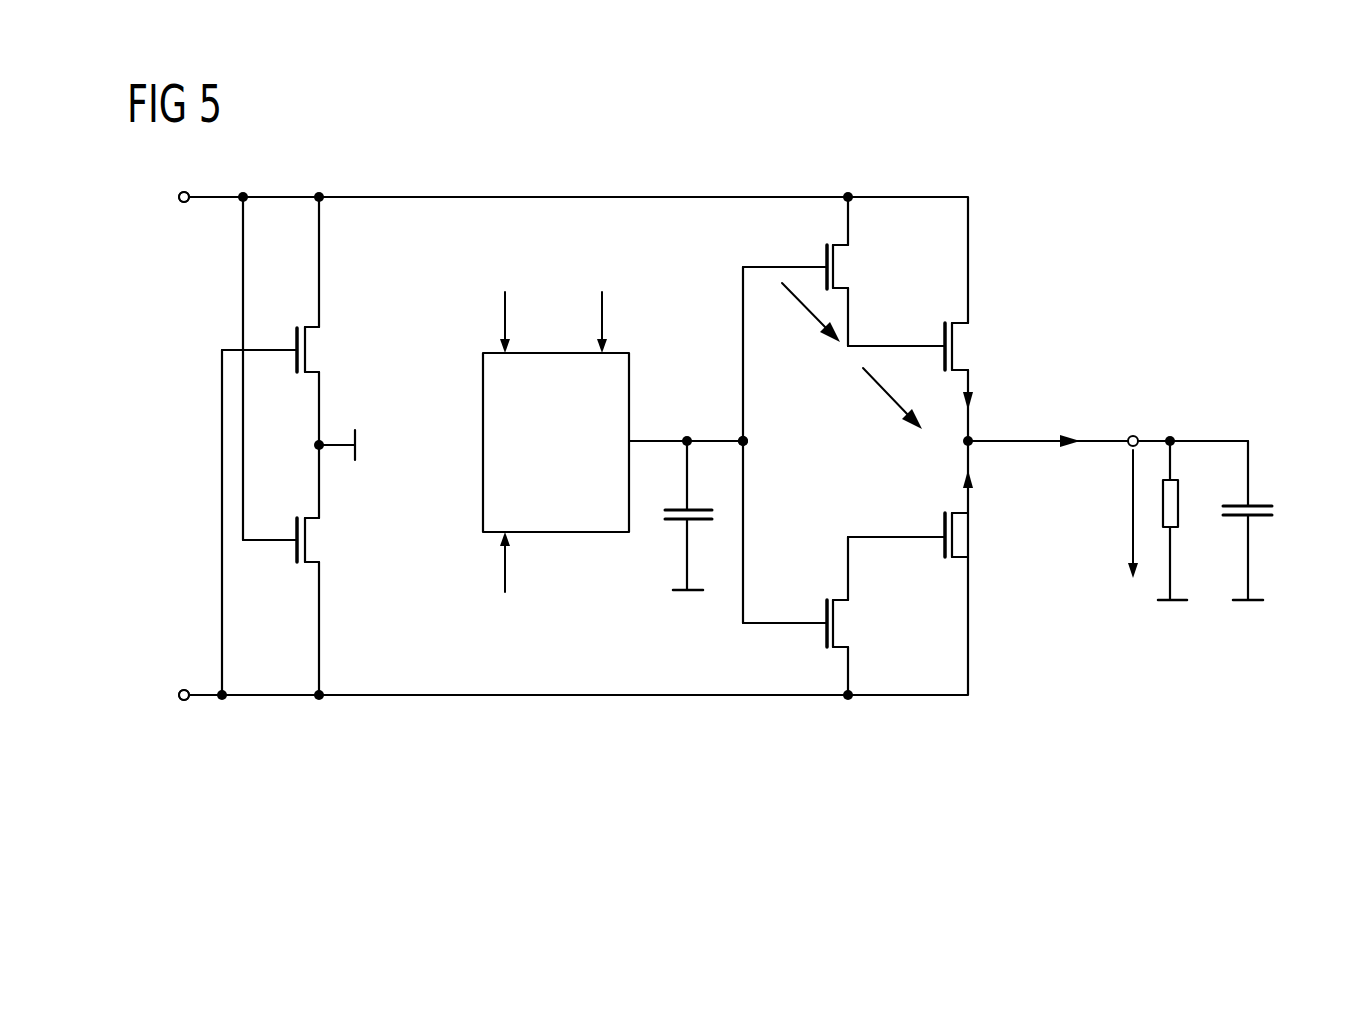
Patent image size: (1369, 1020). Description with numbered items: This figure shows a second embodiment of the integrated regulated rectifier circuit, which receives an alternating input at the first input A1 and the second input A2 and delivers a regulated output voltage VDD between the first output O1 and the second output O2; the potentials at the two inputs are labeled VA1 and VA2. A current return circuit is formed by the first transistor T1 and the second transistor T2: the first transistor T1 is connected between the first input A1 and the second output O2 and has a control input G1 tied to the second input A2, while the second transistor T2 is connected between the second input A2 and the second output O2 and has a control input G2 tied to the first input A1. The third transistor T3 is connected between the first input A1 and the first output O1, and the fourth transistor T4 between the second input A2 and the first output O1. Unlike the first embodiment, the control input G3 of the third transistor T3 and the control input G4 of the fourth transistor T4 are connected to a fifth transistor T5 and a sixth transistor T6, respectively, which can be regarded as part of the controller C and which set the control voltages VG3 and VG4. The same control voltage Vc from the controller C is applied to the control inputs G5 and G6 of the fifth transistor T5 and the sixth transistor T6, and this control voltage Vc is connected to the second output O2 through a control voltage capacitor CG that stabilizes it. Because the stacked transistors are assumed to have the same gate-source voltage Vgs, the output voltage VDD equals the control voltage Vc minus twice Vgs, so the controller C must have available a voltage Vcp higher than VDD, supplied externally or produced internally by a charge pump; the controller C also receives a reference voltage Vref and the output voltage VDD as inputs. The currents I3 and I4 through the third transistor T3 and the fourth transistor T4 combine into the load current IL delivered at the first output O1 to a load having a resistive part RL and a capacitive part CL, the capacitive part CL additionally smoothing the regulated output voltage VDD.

The first input voltage terminal VA1 is at (158, 201).
The second input voltage terminal VA2 is at (158, 698).
The first input A1 is at (185, 203).
The second input A2 is at (185, 701).
The first transistor T1 is at (310, 338).
The second transistor T2 is at (310, 529).
The third transistor T3 is at (956, 349).
The fourth transistor T4 is at (956, 540).
The fifth transistor T5 is at (838, 257).
The sixth transistor T6 is at (838, 628).
The control input of the first transistor G1 is at (259, 332).
The control input of the second transistor G2 is at (270, 522).
The control input of the third transistor G3 is at (896, 366).
The control input of the fourth transistor G4 is at (896, 552).
The gate of fifth transistor G5 is at (785, 248).
The gate of sixth transistor G6 is at (785, 643).
The control voltage of the third transistor VG3 is at (896, 327).
The control voltage of the fourth transistor VG4 is at (896, 518).
The second output O2 is at (360, 448).
The first output O1 is at (1135, 421).
The controller C is at (483, 385).
The voltage higher than VDD Vcp is at (527, 322).
The output voltage VDD is at (854, 405).
The reference voltage Vref is at (530, 562).
The control voltage capacitor CG is at (676, 522).
The control voltage Vc is at (759, 444).
The gate-source voltage Vgs is at (790, 295).
The current through third transistor I3 is at (982, 404).
The current through fourth transistor I4 is at (982, 472).
The load current IL is at (1070, 424).
The resistive part of the load RL is at (1176, 530).
The capacitive part of the load CL is at (1274, 512).